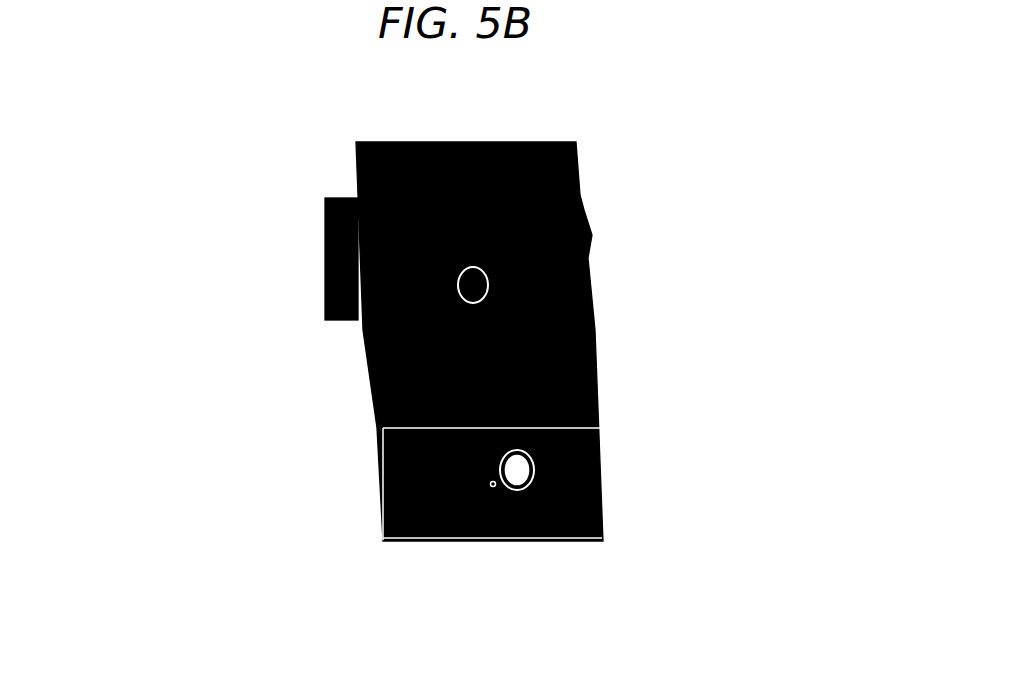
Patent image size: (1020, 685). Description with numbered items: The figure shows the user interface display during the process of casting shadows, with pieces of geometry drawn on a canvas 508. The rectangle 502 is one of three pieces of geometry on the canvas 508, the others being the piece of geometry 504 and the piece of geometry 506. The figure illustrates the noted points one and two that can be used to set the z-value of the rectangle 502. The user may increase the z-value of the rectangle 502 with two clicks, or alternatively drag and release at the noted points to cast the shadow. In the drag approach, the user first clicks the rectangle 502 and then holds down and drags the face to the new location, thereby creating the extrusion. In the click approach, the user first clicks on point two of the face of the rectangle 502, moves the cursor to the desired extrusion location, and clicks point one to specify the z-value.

The rectangle 502 is at (588, 485).
The piece of geometry 504 is at (565, 262).
The piece of geometry 506 is at (332, 300).
The canvas 508 is at (668, 163).